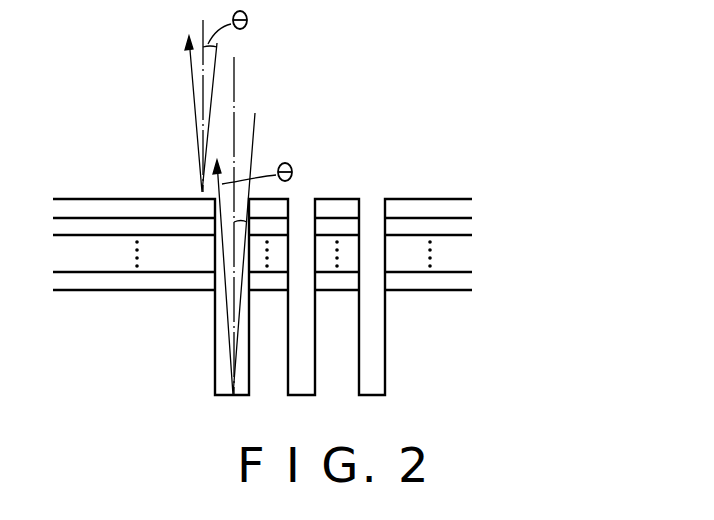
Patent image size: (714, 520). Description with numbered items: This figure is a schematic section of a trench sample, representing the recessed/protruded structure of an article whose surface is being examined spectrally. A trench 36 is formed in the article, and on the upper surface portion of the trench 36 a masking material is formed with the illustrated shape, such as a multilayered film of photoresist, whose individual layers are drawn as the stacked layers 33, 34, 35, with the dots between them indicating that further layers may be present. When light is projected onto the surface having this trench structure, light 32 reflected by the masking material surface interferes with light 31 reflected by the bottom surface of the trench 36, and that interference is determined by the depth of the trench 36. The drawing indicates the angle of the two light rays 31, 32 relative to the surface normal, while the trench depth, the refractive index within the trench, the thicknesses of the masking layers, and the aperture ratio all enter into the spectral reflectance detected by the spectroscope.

The light reflected by the bottom surface of the trench 31 is at (240, 168).
The light reflected by the masking material surface 32 is at (193, 88).
The first layer 33 is at (457, 205).
The second layer 34 is at (458, 227).
The third layer 35 is at (458, 279).
The trench 36 is at (378, 388).